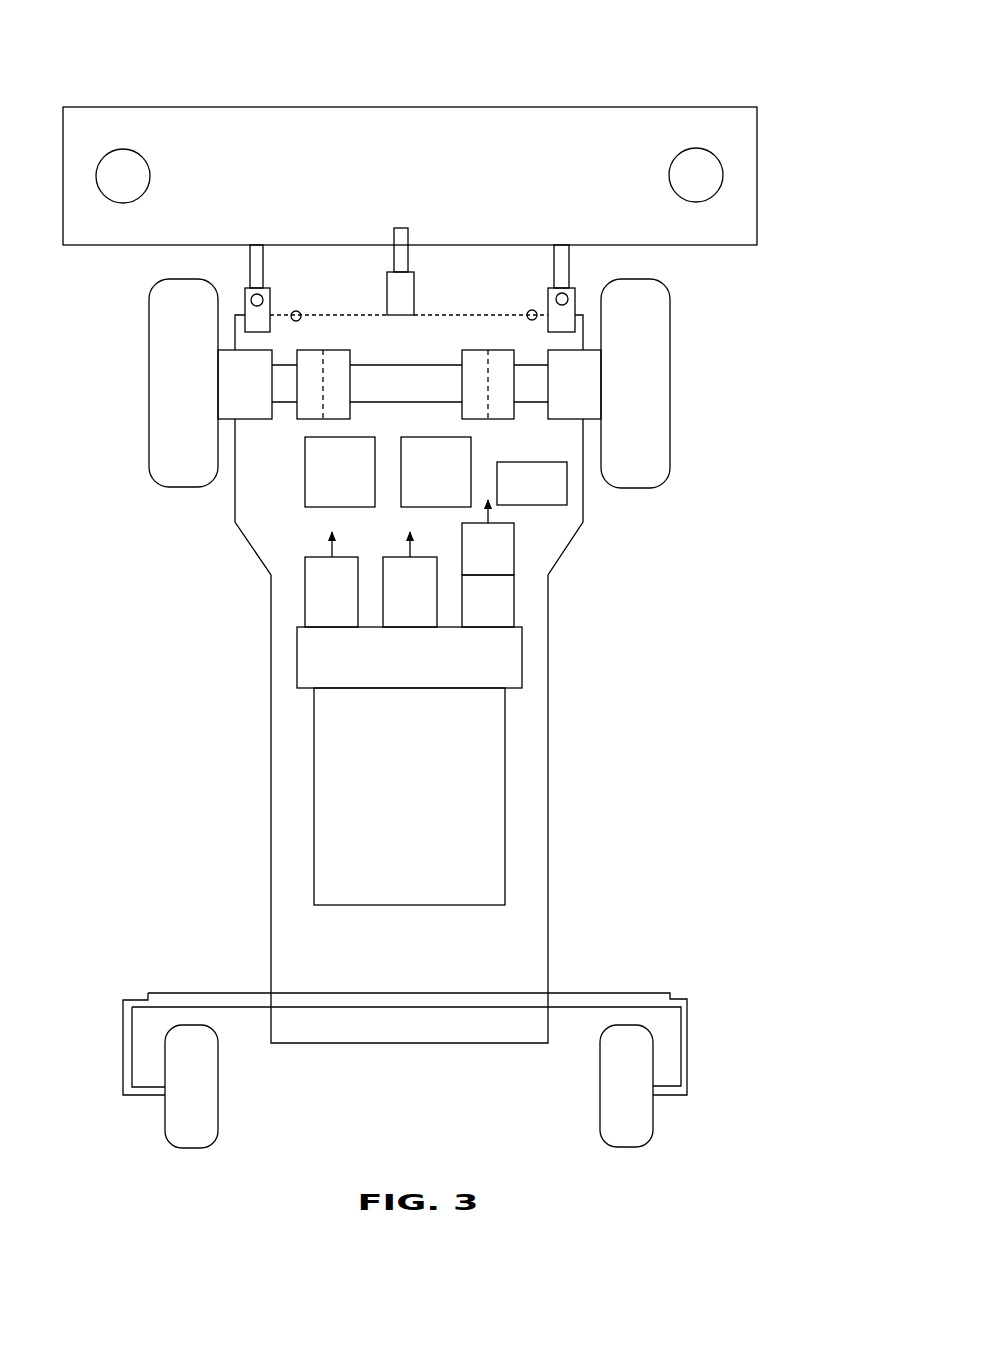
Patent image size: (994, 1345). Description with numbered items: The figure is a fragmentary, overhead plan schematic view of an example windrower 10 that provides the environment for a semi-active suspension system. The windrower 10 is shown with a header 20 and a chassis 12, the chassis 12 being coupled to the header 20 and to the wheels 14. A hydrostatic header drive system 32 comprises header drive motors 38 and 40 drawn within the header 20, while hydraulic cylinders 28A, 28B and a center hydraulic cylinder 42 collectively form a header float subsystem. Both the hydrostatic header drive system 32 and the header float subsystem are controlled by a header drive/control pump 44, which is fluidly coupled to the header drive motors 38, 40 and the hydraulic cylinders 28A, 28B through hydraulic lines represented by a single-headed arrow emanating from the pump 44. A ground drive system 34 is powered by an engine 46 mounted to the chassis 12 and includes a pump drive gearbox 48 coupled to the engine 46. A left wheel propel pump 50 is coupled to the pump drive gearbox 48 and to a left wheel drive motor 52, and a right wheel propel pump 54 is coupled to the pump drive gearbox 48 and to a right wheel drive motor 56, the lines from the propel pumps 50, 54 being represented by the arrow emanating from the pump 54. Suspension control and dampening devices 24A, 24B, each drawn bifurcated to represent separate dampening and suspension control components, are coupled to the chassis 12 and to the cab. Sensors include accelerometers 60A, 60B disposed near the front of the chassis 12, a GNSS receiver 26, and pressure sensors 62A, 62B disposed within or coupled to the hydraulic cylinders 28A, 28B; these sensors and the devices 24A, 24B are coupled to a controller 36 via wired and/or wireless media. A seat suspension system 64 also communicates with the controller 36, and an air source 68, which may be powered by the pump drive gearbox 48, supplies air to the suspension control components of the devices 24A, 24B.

The windrower 10 is at (689, 72).
The chassis 12 is at (548, 887).
The wheels 14 is at (670, 382).
The header 20 is at (757, 175).
The suspension control and dampening device 24A is at (497, 400).
The suspension control and dampening device 24B is at (307, 393).
The GNSS receiver 26 is at (436, 472).
The hydraulic cylinder 28A is at (548, 307).
The hydraulic cylinder 28B is at (263, 272).
The hydrostatic header drive system 32 is at (289, 88).
The ground drive system 34 is at (235, 705).
The controller 36 is at (340, 472).
The header drive motor 38 is at (123, 203).
The header drive motor 40 is at (696, 202).
The center hydraulic cylinder 42 is at (402, 236).
The header drive/control pump 44 is at (305, 592).
The engine 46 is at (409, 796).
The pump drive gearbox 48 is at (409, 657).
The left wheel propel pump 50 is at (514, 600).
The left wheel drive motor 52 is at (245, 384).
The right wheel propel pump 54 is at (514, 550).
The right wheel drive motor 56 is at (574, 384).
The accelerometer 60A is at (523, 318).
The accelerometer 60B is at (300, 314).
The pressure sensor 62A is at (557, 295).
The pressure sensor 62B is at (263, 298).
The seat suspension system 64 is at (532, 483).
The air source 68 is at (383, 608).